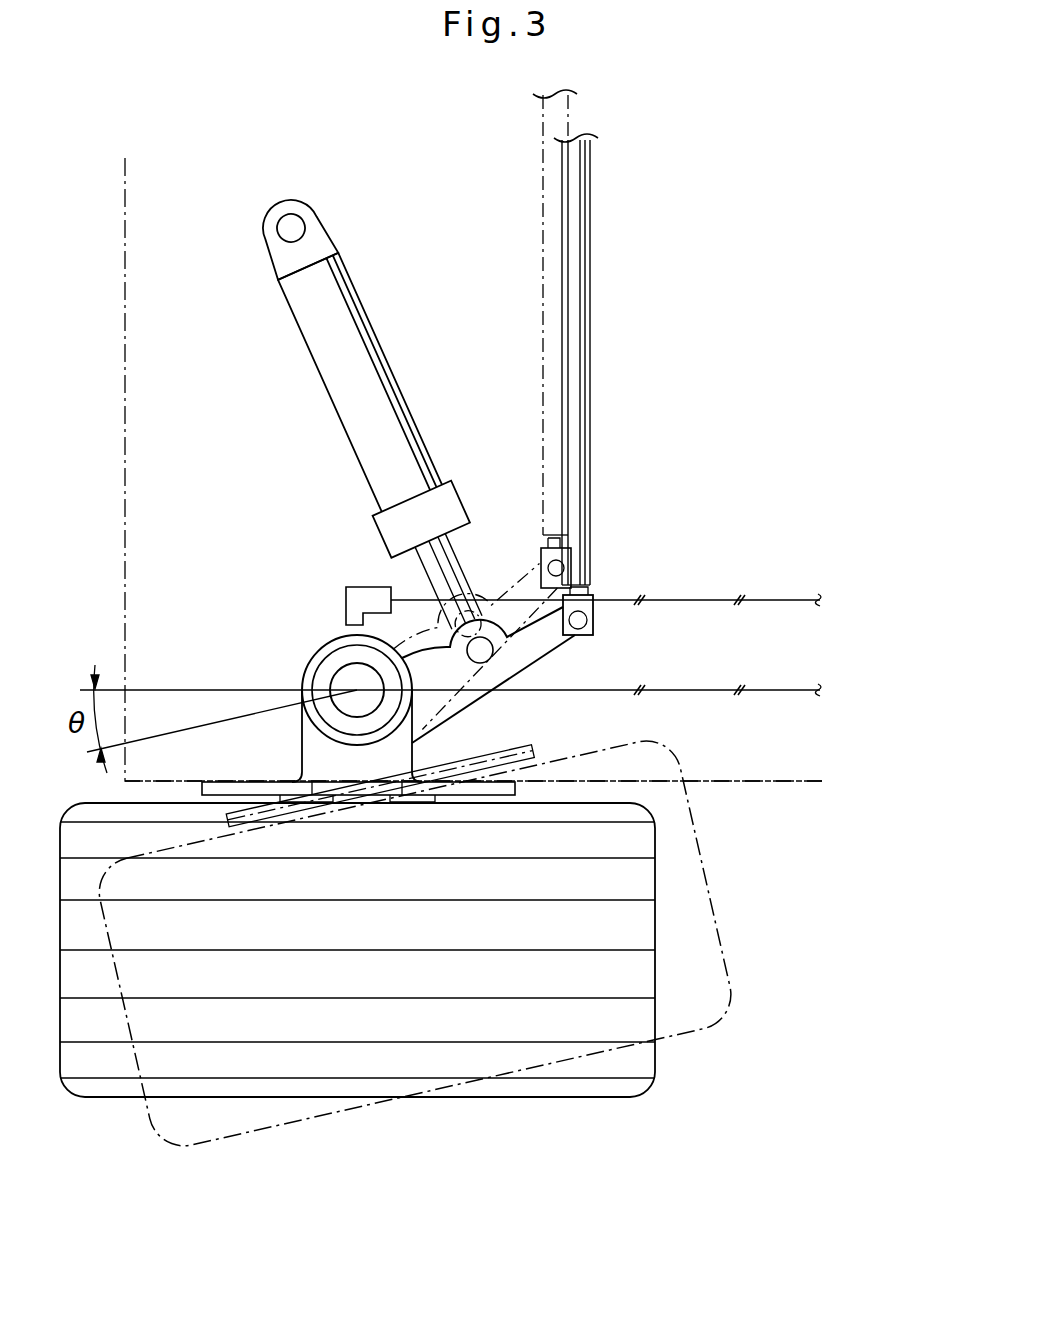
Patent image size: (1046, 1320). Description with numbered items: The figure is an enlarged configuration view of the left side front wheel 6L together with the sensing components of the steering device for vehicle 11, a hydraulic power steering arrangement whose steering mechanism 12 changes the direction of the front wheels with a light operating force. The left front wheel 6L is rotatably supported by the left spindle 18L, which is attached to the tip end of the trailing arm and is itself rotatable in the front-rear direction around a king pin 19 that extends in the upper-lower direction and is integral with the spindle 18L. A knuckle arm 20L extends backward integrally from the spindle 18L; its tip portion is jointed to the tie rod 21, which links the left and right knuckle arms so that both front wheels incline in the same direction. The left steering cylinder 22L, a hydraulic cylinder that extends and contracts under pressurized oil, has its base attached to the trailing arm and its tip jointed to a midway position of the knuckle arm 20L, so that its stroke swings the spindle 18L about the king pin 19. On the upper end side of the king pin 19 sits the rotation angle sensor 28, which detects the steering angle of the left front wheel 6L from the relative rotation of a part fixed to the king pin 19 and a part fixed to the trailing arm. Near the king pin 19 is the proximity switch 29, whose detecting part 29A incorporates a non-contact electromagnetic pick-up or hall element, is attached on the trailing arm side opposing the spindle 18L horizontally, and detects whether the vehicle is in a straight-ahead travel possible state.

The left front wheel 6L is at (533, 1098).
The steering device for vehicle 11 is at (790, 783).
The steering mechanism 12 is at (530, 416).
The left spindle 18L is at (325, 760).
The king pin 19 is at (342, 662).
The knuckle arm 20L is at (566, 652).
The tie rod 21 is at (543, 186).
The left steering cylinder 22L is at (375, 356).
The rotation angle sensor 28 is at (352, 690).
The proximity switch 29 is at (344, 595).
The detecting part 29A is at (363, 598).